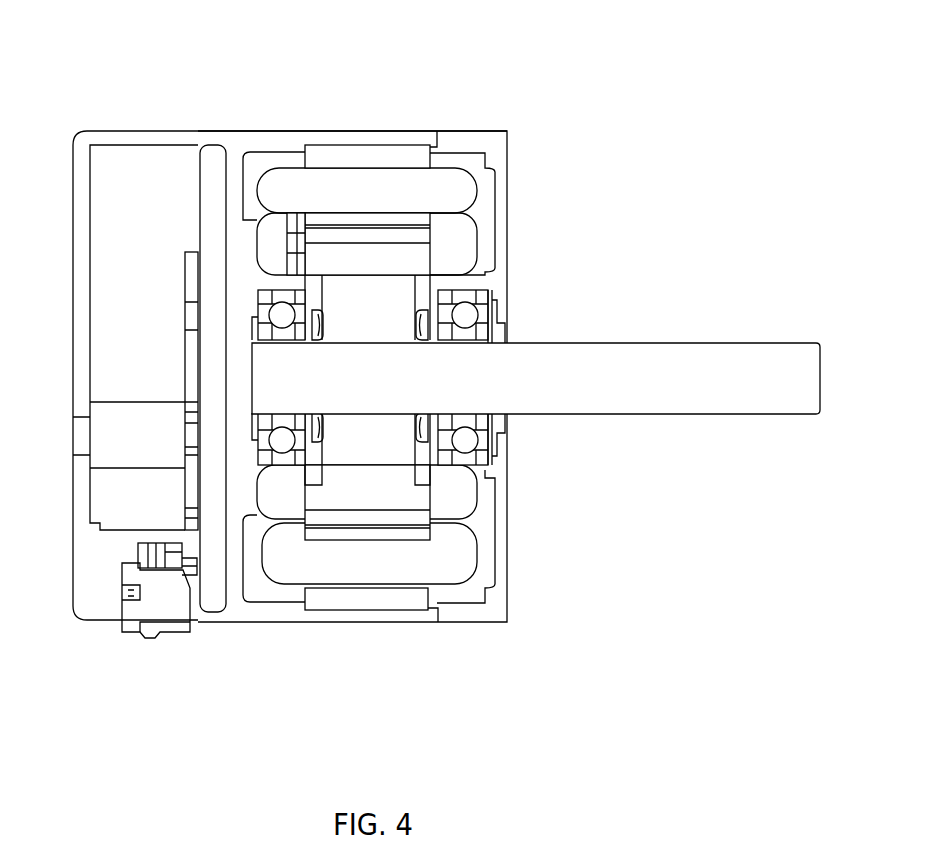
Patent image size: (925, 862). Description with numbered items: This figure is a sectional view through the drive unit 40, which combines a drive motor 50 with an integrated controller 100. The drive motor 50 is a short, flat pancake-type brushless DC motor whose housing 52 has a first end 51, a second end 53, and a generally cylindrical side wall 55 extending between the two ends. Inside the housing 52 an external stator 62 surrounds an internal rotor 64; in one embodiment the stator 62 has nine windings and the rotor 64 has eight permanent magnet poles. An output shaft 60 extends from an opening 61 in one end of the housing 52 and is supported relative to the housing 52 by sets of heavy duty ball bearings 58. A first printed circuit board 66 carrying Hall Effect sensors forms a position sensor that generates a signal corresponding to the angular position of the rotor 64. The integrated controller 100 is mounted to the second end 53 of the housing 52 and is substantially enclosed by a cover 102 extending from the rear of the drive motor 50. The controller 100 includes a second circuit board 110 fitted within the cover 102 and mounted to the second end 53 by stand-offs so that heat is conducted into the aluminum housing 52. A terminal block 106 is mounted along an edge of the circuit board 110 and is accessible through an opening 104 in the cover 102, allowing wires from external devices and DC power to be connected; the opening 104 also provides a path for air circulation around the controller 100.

The drive unit 40 is at (419, 355).
The drive motor 50 is at (509, 352).
The first end 51 is at (507, 222).
The housing 52 is at (354, 130).
The second end 53 is at (263, 152).
The side wall 55 is at (467, 130).
The ball bearings 58 is at (466, 316).
The shaft 60 is at (660, 342).
The opening 61 is at (508, 343).
The stator 62 is at (412, 495).
The rotor 64 is at (452, 568).
The first printed circuit board 66 is at (293, 222).
The integrated controller 100 is at (419, 355).
The cover 102 is at (137, 130).
The opening 104 is at (112, 537).
The terminal block 106 is at (115, 620).
The second circuit board 110 is at (183, 280).